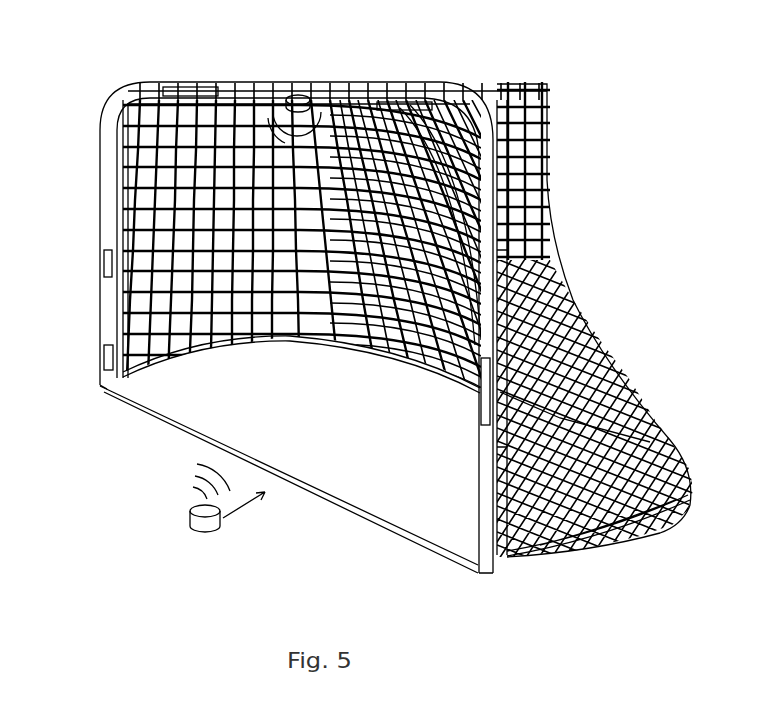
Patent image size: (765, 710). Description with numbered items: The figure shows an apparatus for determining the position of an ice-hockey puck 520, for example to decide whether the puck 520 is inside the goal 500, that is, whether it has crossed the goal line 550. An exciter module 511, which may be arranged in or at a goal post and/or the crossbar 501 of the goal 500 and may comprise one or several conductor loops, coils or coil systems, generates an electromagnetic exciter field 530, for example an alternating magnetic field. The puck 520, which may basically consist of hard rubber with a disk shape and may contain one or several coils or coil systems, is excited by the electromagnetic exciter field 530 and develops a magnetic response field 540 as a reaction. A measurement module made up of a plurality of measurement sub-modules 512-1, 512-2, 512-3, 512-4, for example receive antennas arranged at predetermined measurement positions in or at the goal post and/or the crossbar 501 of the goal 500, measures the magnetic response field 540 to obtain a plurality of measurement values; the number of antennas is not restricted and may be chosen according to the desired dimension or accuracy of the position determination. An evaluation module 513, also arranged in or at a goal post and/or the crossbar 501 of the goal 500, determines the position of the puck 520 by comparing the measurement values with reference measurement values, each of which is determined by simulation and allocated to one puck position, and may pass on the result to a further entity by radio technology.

The goal 500 is at (660, 433).
The crossbar 501 is at (110, 94).
The exciter module 511 is at (300, 96).
The measurement sub-module 512-1 is at (100, 260).
The measurement sub-module 512-2 is at (175, 88).
The measurement sub-module 512-3 is at (402, 100).
The sensor bracket 512-4 is at (478, 420).
The evaluation module 513 is at (100, 350).
The puck 520 is at (202, 537).
The electromagnetic exciter field 530 is at (266, 110).
The magnetic response field 540 is at (200, 473).
The goal line 550 is at (310, 482).